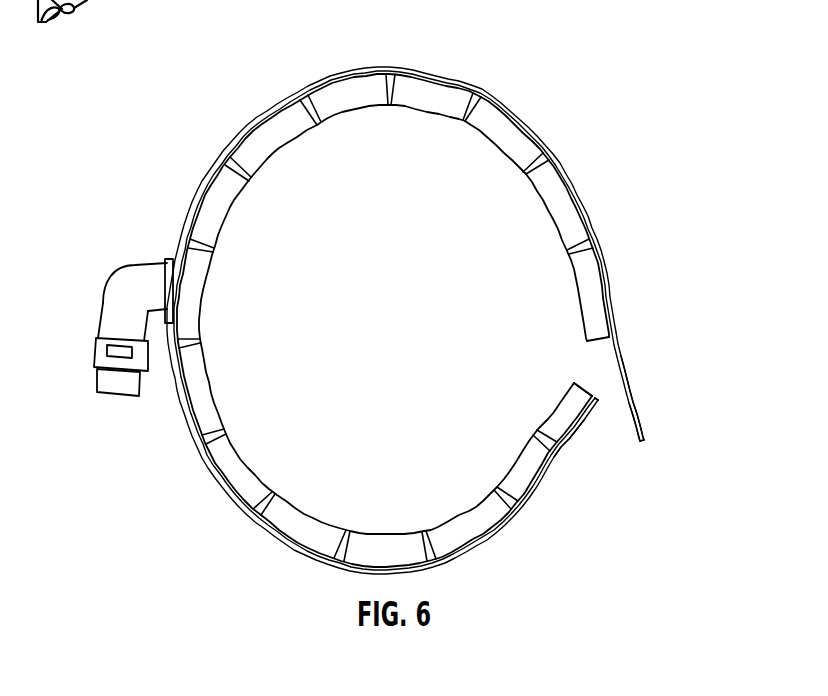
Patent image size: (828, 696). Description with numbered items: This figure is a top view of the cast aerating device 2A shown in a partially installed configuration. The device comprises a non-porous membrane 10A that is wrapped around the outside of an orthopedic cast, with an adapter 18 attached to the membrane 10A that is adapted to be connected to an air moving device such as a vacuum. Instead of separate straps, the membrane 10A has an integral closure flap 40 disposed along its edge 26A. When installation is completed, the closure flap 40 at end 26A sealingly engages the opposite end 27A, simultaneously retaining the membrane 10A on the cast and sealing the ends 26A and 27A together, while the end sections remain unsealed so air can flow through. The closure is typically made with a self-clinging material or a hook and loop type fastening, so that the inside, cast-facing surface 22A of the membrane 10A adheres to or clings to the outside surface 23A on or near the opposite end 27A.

The cast aerating device 2A is at (590, 133).
The membrane 10A is at (482, 85).
The adapter 18 is at (112, 393).
The closure flap 40 is at (627, 359).
The edge 26A is at (644, 438).
The opposite end 27A is at (595, 388).
The inside cast-facing surface 22A is at (640, 422).
The outside surface 23A is at (574, 455).